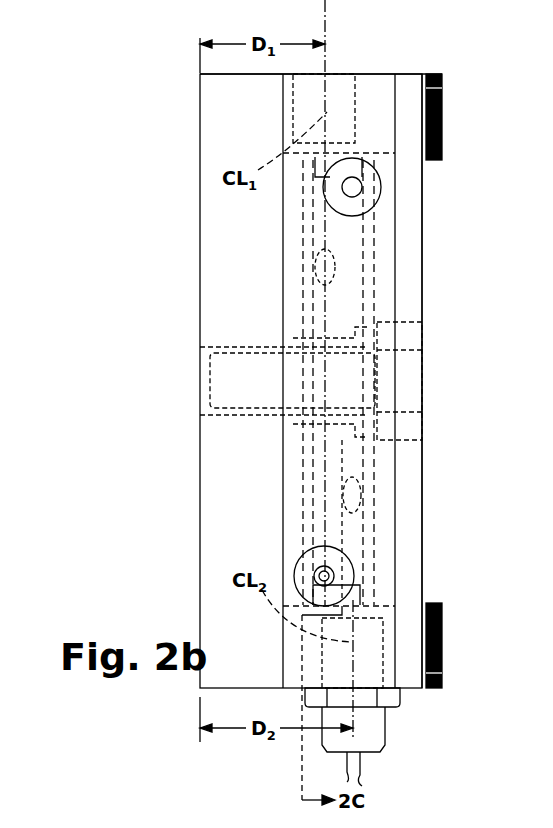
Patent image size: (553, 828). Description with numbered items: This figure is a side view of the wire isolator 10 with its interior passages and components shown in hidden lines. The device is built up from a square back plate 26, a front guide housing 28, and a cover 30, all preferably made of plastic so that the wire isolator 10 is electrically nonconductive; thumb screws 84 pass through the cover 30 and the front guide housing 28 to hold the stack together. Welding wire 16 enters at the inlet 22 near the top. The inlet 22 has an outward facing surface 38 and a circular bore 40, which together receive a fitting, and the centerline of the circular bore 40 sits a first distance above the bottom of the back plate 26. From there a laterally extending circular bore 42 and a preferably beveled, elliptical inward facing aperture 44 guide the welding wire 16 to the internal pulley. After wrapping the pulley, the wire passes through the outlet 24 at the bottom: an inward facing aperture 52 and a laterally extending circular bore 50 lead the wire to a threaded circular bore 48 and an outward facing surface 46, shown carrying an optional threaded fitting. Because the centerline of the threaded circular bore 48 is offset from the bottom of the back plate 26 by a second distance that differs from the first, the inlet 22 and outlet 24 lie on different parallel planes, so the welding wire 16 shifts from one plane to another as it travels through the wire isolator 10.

The wire isolator 10 is at (468, 78).
The welding wire 16 is at (357, 762).
The inlet 22 is at (336, 122).
The outlet 24 is at (378, 197).
The back plate 26 is at (230, 547).
The front guide housing 28 is at (383, 537).
The cover 30 is at (410, 253).
The outward facing surface 38 is at (335, 74).
The circular bore 40 is at (293, 95).
The laterally extending circular bore 42 is at (315, 218).
The inward facing aperture 44 is at (313, 267).
The outward facing surface 46 is at (353, 690).
The threaded circular bore 48 is at (337, 670).
The laterally extending circular bore 50 is at (355, 528).
The inward facing aperture 52 is at (340, 478).
The thumb screws 84 is at (442, 124).